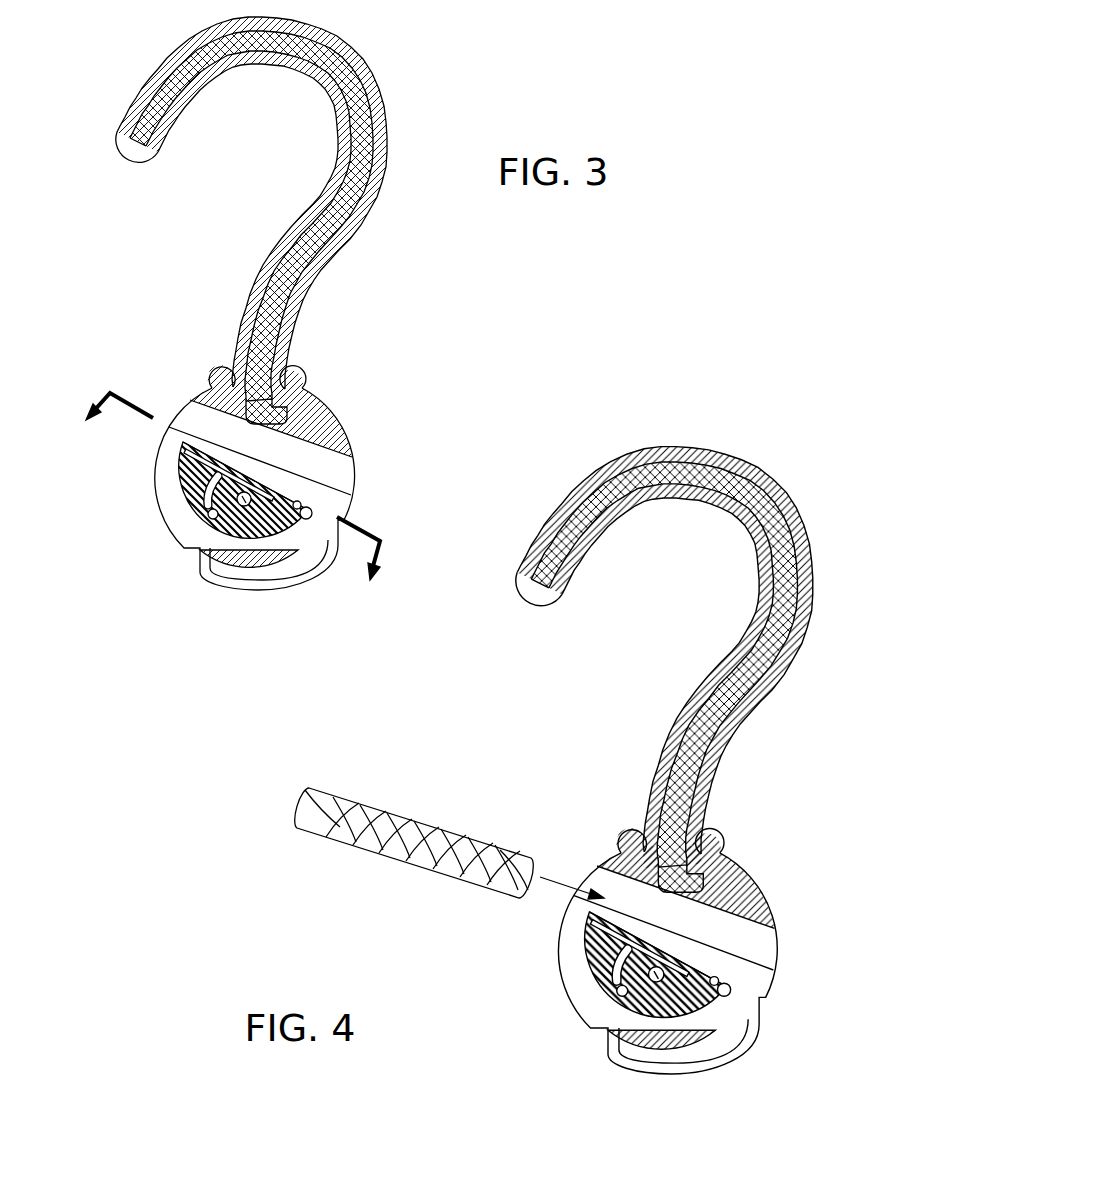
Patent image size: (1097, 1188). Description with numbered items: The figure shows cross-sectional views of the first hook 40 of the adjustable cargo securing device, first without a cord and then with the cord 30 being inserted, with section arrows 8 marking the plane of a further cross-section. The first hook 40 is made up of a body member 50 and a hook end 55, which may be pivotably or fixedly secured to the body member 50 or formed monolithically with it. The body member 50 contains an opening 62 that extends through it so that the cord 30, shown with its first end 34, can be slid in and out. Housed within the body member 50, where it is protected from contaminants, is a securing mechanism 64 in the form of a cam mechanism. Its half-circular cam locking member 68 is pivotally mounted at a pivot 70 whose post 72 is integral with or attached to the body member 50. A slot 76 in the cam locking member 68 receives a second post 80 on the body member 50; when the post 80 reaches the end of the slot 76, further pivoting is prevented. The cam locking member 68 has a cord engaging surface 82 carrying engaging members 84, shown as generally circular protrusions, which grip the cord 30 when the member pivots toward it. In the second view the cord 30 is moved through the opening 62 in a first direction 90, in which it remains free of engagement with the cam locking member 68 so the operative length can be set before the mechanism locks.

In FIG. 3, the section line 8- 8 is at (242, 471).
In FIG. 4, the cord 30 is at (382, 810).
In FIG. 4, the first end 34 is at (496, 845).
In FIG. 3, the first hook 40 is at (386, 318).
In FIG. 4, the first hook 40 is at (755, 760).
In FIG. 3, the body member 50 is at (345, 428).
In FIG. 4, the body member 50 is at (765, 897).
In FIG. 3, the hook end 55 is at (372, 90).
In FIG. 4, the hook end 55 is at (742, 470).
In FIG. 3, the opening 62 is at (186, 405).
In FIG. 4, the opening 62 is at (594, 872).
In FIG. 3, the securing mechanism 64 is at (100, 497).
In FIG. 4, the securing mechanism 64 is at (530, 1012).
In FIG. 3, the cam locking member 68 is at (200, 535).
In FIG. 4, the cam locking member 68 is at (618, 1014).
In FIG. 3, the pivot 70 is at (265, 563).
In FIG. 4, the pivot 70 is at (668, 1045).
In FIG. 3, the post 72 is at (258, 484).
In FIG. 4, the post 72 is at (671, 958).
In FIG. 3, the slot 76 is at (208, 494).
In FIG. 4, the slot 76 is at (617, 969).
In FIG. 3, the second post 80 is at (210, 516).
In FIG. 4, the second post 80 is at (618, 994).
In FIG. 3, the cord engaging surface 82 is at (183, 455).
In FIG. 4, the cord engaging surface 82 is at (589, 926).
In FIG. 3, the engaging member 84 is at (251, 500).
In FIG. 4, the engaging member 84 is at (664, 975).
In FIG. 4, the first direction 90 is at (565, 880).